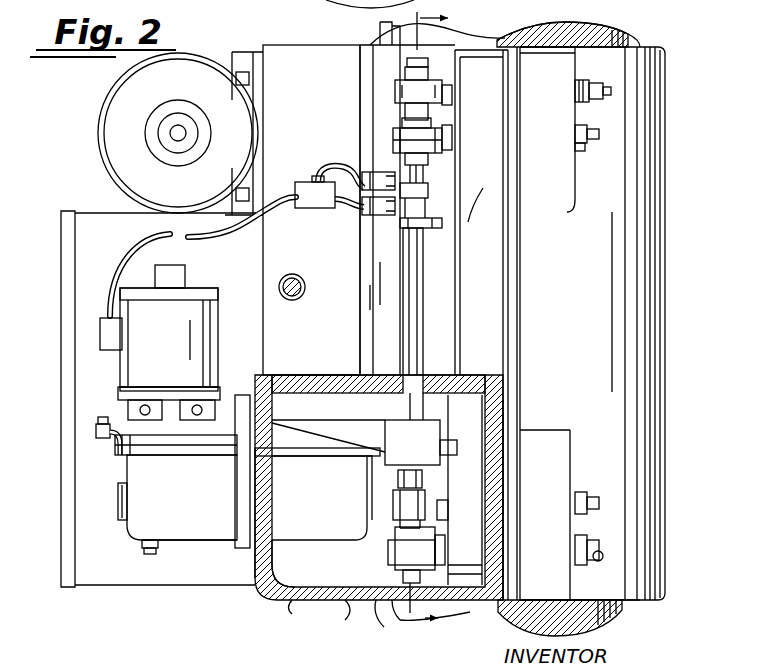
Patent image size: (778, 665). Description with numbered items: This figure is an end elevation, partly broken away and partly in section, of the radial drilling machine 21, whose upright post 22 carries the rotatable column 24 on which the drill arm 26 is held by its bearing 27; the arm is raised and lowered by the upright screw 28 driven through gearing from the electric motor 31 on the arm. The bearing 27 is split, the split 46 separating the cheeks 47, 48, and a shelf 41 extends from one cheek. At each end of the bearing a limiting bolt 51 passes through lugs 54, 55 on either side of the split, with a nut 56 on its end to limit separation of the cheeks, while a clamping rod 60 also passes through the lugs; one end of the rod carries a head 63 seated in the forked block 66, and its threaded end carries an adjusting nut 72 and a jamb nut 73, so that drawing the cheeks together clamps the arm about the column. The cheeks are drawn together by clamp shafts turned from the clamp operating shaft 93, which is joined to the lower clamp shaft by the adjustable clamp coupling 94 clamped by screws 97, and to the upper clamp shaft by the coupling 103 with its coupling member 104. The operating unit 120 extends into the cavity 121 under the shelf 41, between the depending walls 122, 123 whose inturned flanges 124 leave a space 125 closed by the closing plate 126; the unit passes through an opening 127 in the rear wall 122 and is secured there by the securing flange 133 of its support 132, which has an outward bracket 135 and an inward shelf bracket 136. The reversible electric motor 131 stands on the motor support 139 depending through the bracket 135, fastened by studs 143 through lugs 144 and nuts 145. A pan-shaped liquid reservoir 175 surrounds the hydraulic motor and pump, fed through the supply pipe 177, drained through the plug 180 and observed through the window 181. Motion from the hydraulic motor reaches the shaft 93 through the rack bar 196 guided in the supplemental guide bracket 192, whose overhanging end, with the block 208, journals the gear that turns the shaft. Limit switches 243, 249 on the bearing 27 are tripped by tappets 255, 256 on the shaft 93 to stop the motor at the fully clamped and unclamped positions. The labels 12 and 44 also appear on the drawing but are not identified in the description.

The conduit 12 is at (437, 323).
The radial drilling machine 21 is at (640, 45).
The upright post 22 is at (626, 625).
The rotatable column 24 is at (634, 605).
The drill arm 26 is at (670, 250).
The bearing 27 is at (648, 340).
The upright screw 28 is at (372, 47).
The electric motor 31 is at (118, 136).
The shelf 41 is at (448, 374).
The aperture 44 is at (301, 281).
The split 46 is at (512, 276).
The cheek 47 is at (300, 329).
The cheek 48 is at (658, 203).
The limiting bolt 51 is at (592, 134).
The lug 54 is at (481, 218).
The lug 55 is at (556, 172).
The nut 56 is at (586, 149).
The clamping rod 60 is at (598, 88).
The head 63 is at (398, 88).
The block 66 is at (438, 538).
The adjusting nut 72 is at (584, 538).
The jamb nut 73 is at (600, 560).
The clamp operating shaft 93 is at (416, 325).
The adjustable clamp coupling 94 is at (428, 483).
The screws 97 is at (394, 500).
The coupling 103 is at (444, 157).
The coupling member 104 is at (431, 125).
The unit 120 is at (118, 494).
The cavity 121 is at (505, 383).
The rear wall 122 is at (258, 562).
The depending wall 123 is at (506, 411).
The inturned flanges 124 is at (308, 616).
The space 125 is at (340, 623).
The closing plate 126 is at (400, 623).
The opening 127 is at (268, 552).
The reversible electric motor 131 is at (195, 283).
The support 132 is at (286, 418).
The securing flange 133 is at (243, 396).
The bracket 135 is at (192, 460).
The shelf bracket 136 is at (317, 457).
The motor support 139 is at (110, 420).
The studs 143 is at (150, 420).
The lugs 144 is at (148, 412).
The nuts 145 is at (132, 412).
The liquid reservoir 175 is at (186, 544).
The liquid supply pipe 177 is at (113, 446).
The plug 180 is at (148, 556).
The window 181 is at (119, 514).
The supplemental guide bracket 192 is at (344, 433).
The rack bar 196 is at (459, 440).
The block 208 is at (392, 457).
The limit switch 243 is at (380, 228).
The limit switch 249 is at (396, 174).
The switch operating tappet 255 is at (437, 193).
The switch operating tappet 256 is at (438, 232).